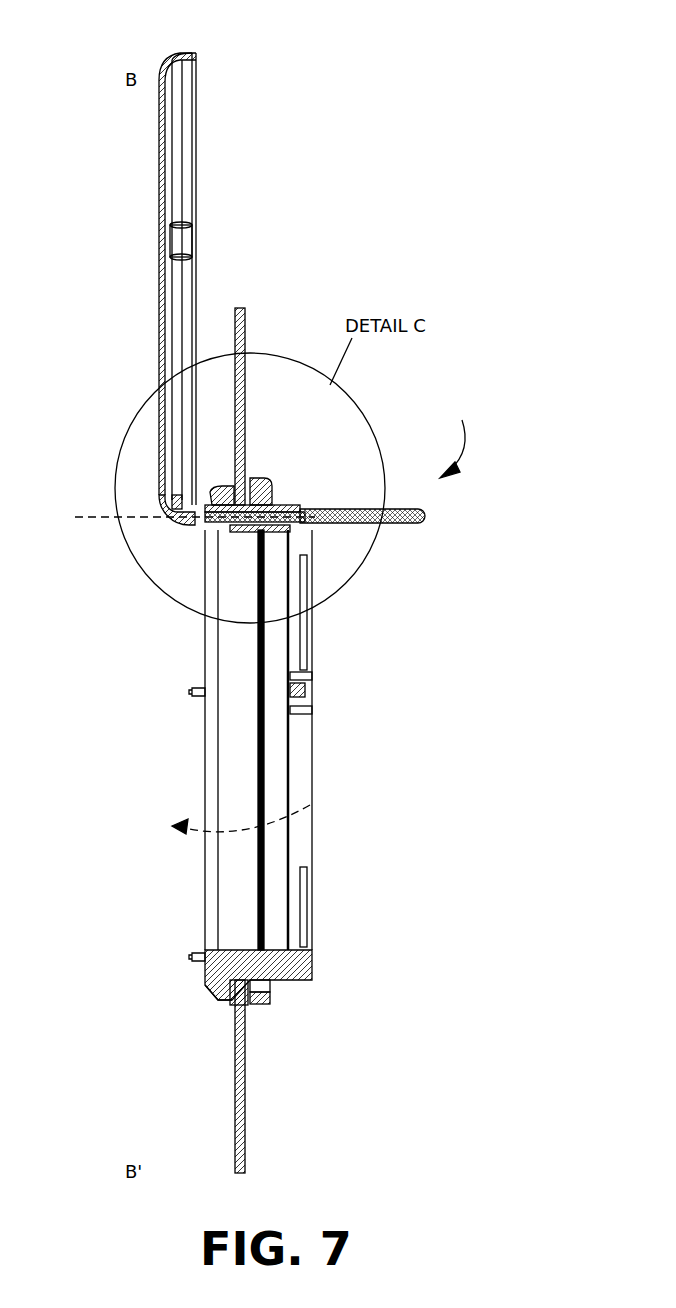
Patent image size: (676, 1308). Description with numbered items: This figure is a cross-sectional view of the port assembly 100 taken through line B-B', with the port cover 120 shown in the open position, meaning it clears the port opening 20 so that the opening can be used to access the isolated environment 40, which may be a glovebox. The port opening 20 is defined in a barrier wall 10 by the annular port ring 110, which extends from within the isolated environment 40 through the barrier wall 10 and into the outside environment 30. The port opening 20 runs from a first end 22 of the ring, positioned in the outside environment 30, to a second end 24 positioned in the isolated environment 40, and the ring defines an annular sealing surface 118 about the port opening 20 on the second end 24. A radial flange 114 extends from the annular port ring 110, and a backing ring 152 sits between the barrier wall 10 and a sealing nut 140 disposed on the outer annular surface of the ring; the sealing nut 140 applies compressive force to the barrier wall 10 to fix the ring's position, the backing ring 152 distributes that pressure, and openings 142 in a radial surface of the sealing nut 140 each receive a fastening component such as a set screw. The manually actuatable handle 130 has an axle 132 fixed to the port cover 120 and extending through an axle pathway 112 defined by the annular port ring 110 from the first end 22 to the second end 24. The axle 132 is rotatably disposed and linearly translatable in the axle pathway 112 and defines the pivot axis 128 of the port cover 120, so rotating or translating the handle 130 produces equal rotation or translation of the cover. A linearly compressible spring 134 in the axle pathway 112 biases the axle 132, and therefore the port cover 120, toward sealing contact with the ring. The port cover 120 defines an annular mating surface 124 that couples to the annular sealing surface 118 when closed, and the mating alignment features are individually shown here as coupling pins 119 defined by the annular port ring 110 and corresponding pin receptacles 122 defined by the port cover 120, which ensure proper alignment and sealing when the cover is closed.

The barrier wall 10 is at (245, 333).
The port opening 20 is at (308, 808).
The first end 22 is at (305, 845).
The second end 24 is at (213, 893).
The outside environment 30 is at (308, 1127).
The isolated environment 40 is at (201, 1127).
The port assembly 100 is at (458, 437).
The annular port ring 110 is at (290, 972).
The axle pathway 112 is at (216, 545).
The radial flange 114 is at (310, 918).
The annular sealing surface 118 is at (205, 968).
The coupling pins 119 is at (192, 692).
The port cover 120 is at (160, 183).
The pin receptacles 122 is at (190, 243).
The annular mating surface 124 is at (196, 56).
The pivot axis 128 is at (195, 516).
The manually actuatable handle 130 is at (430, 520).
The axle 132 is at (198, 530).
The spring 134 is at (230, 534).
The sealing nut 140 is at (265, 480).
The openings 142 is at (300, 496).
The backing ring 152 is at (235, 490).